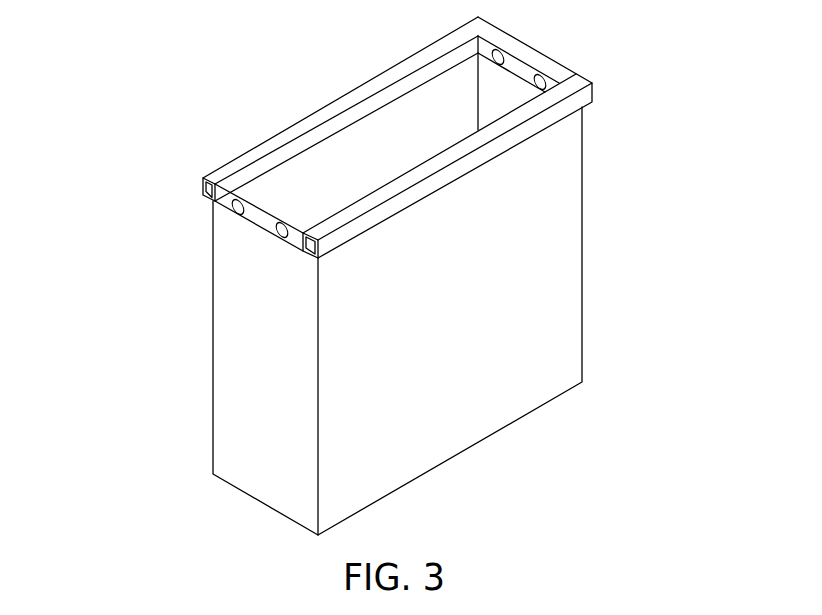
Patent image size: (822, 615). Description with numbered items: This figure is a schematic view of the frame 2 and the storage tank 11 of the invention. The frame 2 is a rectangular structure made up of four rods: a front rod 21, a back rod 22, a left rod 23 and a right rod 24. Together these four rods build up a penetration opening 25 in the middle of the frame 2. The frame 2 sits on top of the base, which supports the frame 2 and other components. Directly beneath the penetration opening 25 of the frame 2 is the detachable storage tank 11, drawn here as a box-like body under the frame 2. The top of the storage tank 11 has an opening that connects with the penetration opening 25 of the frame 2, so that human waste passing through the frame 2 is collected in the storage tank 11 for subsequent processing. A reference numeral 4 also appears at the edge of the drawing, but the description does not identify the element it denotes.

The frame 2 is at (397, 132).
The adjacent component (partially shown) 4 is at (512, 614).
The storage tank 11 is at (523, 210).
The front rod 21 is at (260, 202).
The back rod 22 is at (525, 55).
The left rod 23 is at (372, 82).
The right rod 24 is at (502, 127).
The penetration opening 25 is at (372, 153).